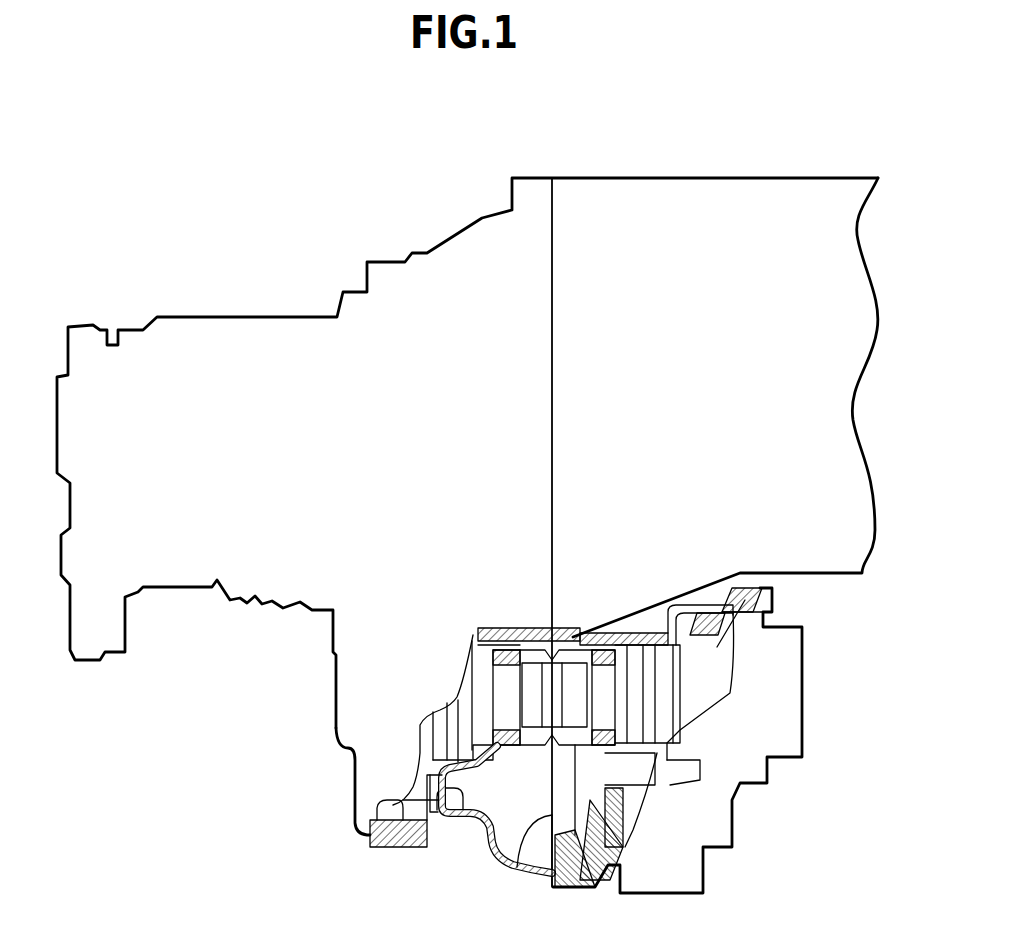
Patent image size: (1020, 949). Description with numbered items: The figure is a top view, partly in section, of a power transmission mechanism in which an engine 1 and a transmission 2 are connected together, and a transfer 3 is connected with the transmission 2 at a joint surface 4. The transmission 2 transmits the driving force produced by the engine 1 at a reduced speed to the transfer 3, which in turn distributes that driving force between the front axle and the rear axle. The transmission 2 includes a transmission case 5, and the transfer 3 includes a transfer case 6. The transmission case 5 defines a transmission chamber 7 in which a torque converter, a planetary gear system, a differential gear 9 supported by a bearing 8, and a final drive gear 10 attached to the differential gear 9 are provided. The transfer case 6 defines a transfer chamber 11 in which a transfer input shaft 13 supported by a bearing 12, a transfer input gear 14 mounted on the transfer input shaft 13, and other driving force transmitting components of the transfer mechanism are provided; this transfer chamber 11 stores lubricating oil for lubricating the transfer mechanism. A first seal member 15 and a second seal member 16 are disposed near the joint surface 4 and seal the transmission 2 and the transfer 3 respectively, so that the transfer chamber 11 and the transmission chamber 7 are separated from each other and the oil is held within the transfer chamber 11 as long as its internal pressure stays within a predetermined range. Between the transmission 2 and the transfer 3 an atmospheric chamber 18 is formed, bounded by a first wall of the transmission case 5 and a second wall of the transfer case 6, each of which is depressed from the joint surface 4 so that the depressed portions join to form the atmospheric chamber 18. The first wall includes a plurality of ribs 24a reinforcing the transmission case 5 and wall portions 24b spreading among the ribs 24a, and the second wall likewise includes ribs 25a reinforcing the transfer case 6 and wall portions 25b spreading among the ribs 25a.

The engine 1 is at (825, 205).
The transmission 2 is at (222, 340).
The transfer 3 is at (795, 682).
The joint surface 4 is at (528, 840).
The transmission case 5 is at (370, 838).
The transfer case 6 is at (712, 612).
The transmission chamber 7 is at (422, 783).
The bearing 8 is at (490, 663).
The differential gear 9 is at (442, 740).
The final drive gear 10 is at (392, 810).
The transfer chamber 11 is at (678, 648).
The bearing 12 is at (598, 655).
The transfer input shaft 13 is at (705, 690).
The transfer input gear 14 is at (745, 628).
The first seal member 15 is at (548, 592).
The second seal member 16 is at (553, 655).
The atmospheric chamber 18 is at (535, 860).
The ribs 24a is at (452, 815).
The wall portions 24b is at (470, 818).
The ribs 25a is at (575, 870).
The wall portions 25b is at (593, 780).